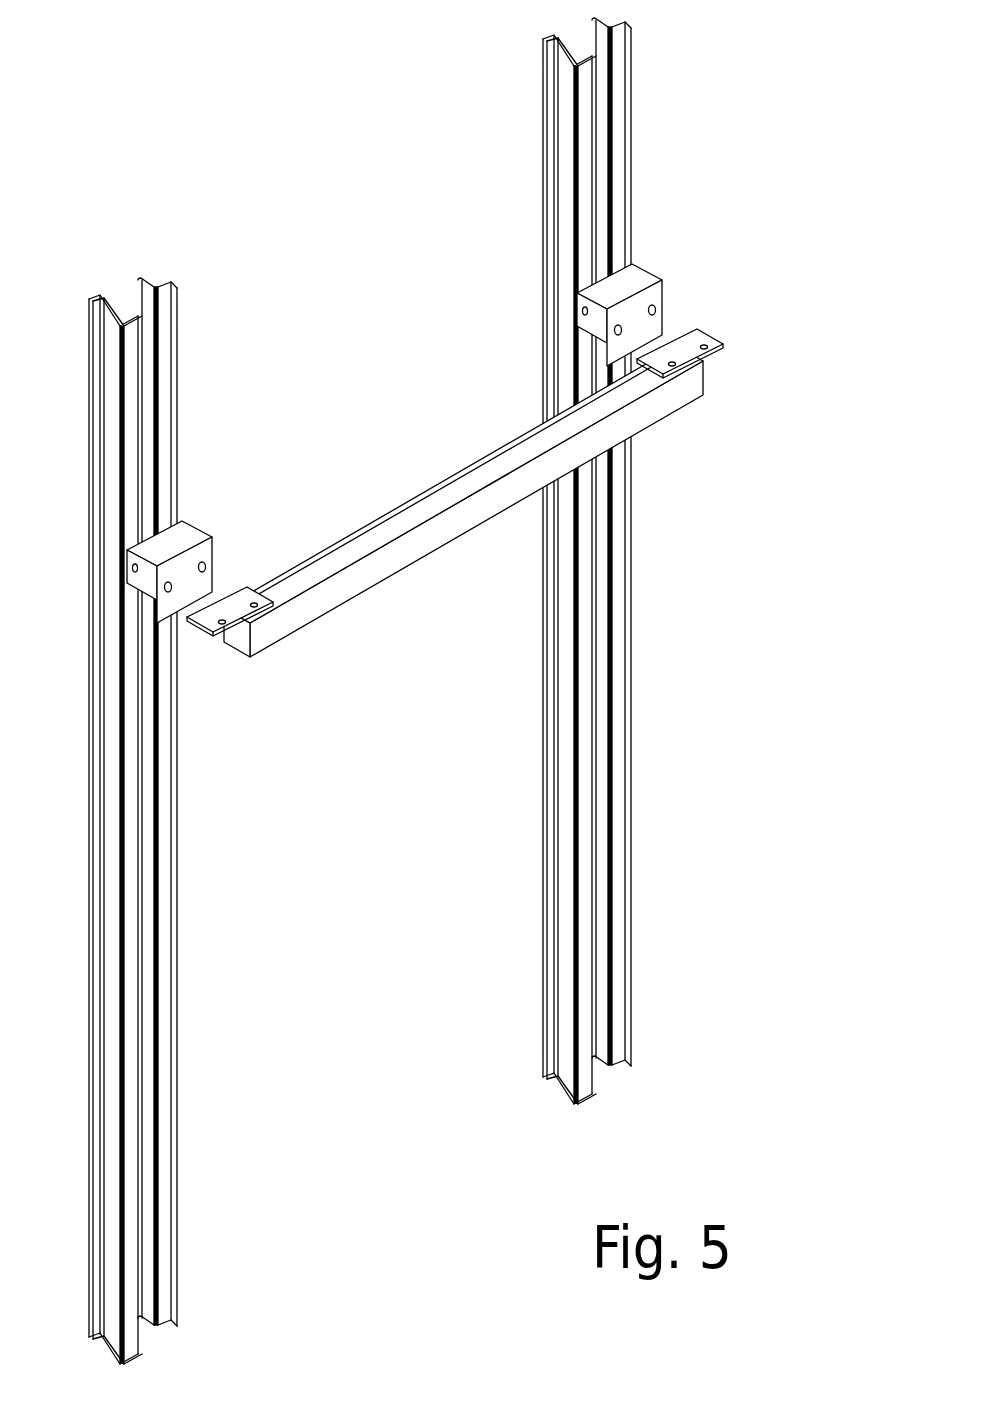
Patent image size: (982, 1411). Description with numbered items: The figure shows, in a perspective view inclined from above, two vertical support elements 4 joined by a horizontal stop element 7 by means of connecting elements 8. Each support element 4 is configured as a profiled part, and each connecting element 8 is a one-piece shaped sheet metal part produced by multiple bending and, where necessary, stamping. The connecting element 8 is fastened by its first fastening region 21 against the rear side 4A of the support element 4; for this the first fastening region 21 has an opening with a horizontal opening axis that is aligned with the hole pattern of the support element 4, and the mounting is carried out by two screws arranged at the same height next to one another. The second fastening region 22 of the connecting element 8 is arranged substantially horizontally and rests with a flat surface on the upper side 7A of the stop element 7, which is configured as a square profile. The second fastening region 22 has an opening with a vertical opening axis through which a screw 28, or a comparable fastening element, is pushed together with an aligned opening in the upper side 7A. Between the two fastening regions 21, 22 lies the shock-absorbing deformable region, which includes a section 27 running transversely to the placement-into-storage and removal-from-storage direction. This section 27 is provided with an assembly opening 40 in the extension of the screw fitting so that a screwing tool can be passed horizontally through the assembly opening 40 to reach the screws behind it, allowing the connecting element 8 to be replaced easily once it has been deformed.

The support element 4 is at (414, 691).
The rear side of the support element 4A is at (585, 193).
The stop element 7 is at (463, 498).
The upper side of the stop element 7A is at (503, 458).
The connecting element 8 is at (396, 478).
The first fastening region 21 is at (142, 572).
The second fastening region 22 is at (238, 605).
The section 27 is at (180, 593).
The screw 28 is at (482, 482).
The assembly opening 40 is at (620, 330).